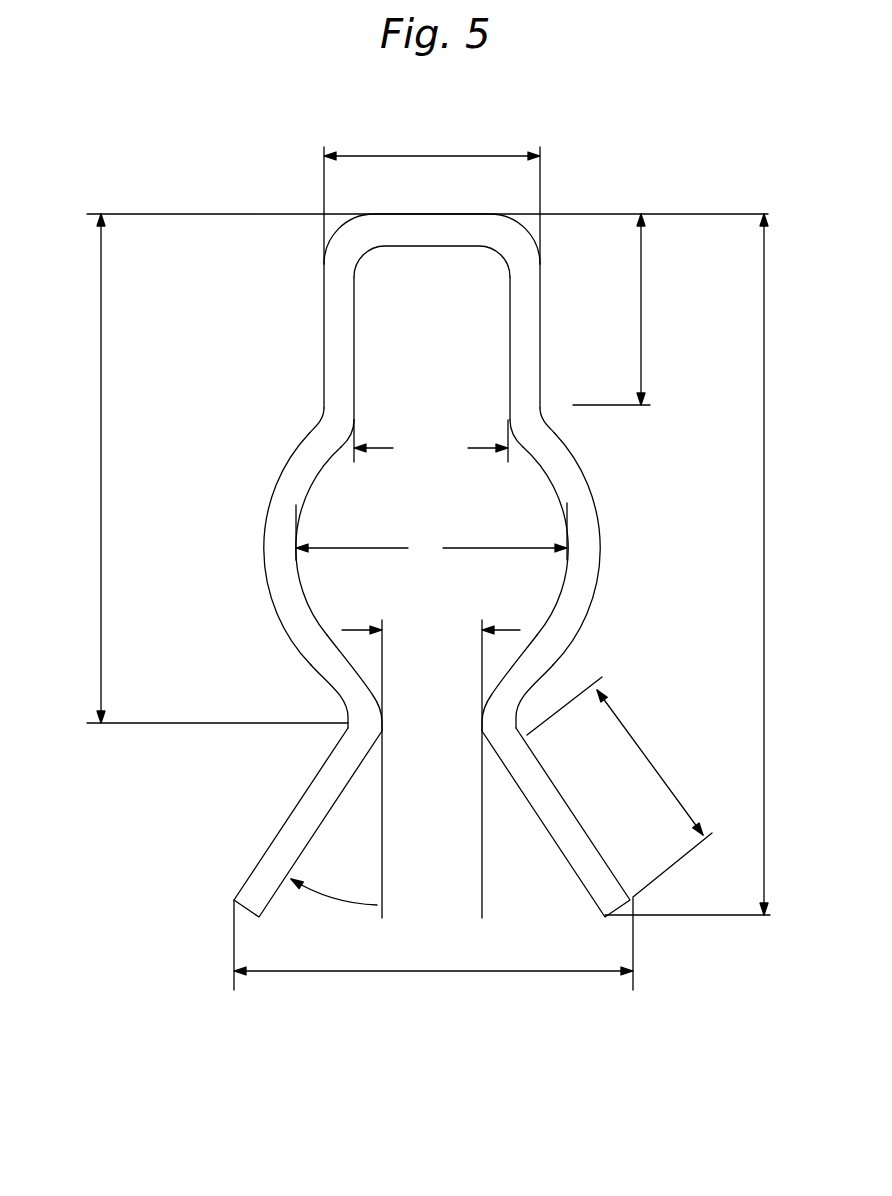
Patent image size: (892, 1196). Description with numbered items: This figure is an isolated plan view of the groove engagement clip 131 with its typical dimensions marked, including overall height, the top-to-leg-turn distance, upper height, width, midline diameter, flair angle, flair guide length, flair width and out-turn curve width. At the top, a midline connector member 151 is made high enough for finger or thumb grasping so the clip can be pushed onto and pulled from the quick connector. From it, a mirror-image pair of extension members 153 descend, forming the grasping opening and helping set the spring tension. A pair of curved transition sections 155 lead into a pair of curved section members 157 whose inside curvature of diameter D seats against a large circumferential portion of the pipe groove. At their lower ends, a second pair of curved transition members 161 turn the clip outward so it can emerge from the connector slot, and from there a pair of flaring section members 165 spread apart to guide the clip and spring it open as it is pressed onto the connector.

The groove engagement clip 131 is at (257, 147).
The midline connector member 151 is at (405, 225).
The extension members 153 is at (330, 358).
The curved transition sections 155 is at (345, 415).
The curved section members 157 is at (277, 520).
The second pair of curved transition members 161 is at (483, 730).
The flaring section members 165 is at (313, 808).